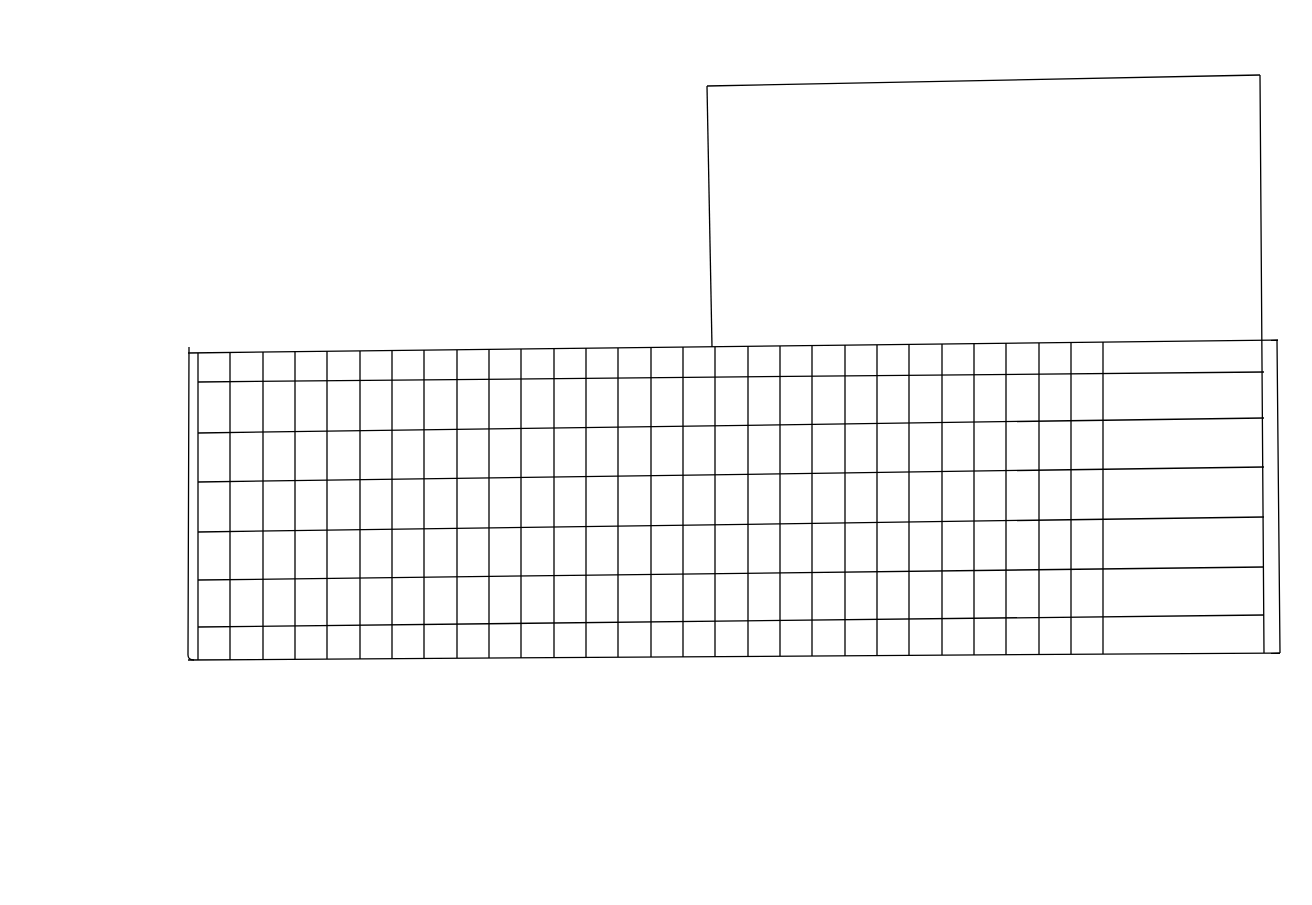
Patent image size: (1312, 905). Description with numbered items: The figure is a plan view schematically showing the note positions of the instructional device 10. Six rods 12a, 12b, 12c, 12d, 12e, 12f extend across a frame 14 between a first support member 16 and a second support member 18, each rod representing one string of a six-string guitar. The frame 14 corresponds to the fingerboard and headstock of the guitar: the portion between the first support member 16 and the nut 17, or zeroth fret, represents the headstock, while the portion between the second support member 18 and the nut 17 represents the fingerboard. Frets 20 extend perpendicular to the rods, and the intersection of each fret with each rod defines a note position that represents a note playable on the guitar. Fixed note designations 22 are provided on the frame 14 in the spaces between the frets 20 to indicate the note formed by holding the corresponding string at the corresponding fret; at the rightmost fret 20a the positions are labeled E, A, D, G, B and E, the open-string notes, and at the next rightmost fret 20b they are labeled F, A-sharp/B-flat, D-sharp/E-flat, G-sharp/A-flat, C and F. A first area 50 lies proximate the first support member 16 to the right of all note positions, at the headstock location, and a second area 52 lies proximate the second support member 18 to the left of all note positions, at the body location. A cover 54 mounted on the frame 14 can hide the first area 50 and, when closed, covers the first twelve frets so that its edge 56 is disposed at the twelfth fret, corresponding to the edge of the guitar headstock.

The instructional device 10 is at (589, 147).
The first rod 12a is at (313, 432).
The second rod 12b is at (320, 478).
The third rod 12c is at (337, 353).
The fourth rod 12d is at (277, 532).
The fifth rod 12e is at (248, 580).
The sixth rod 12f is at (240, 627).
The frame 14 is at (762, 347).
The first support member 16 is at (1272, 640).
The nut 17 is at (1103, 357).
The second support member 18 is at (190, 353).
The frets 20 is at (666, 487).
The first fret 20a is at (1072, 357).
The second fret 20b is at (1038, 358).
The fixed note designations 22 is at (602, 381).
The first area 50 is at (1173, 644).
The second area 52 is at (318, 610).
The cover 54 is at (946, 185).
The edge of cover 56 is at (707, 142).